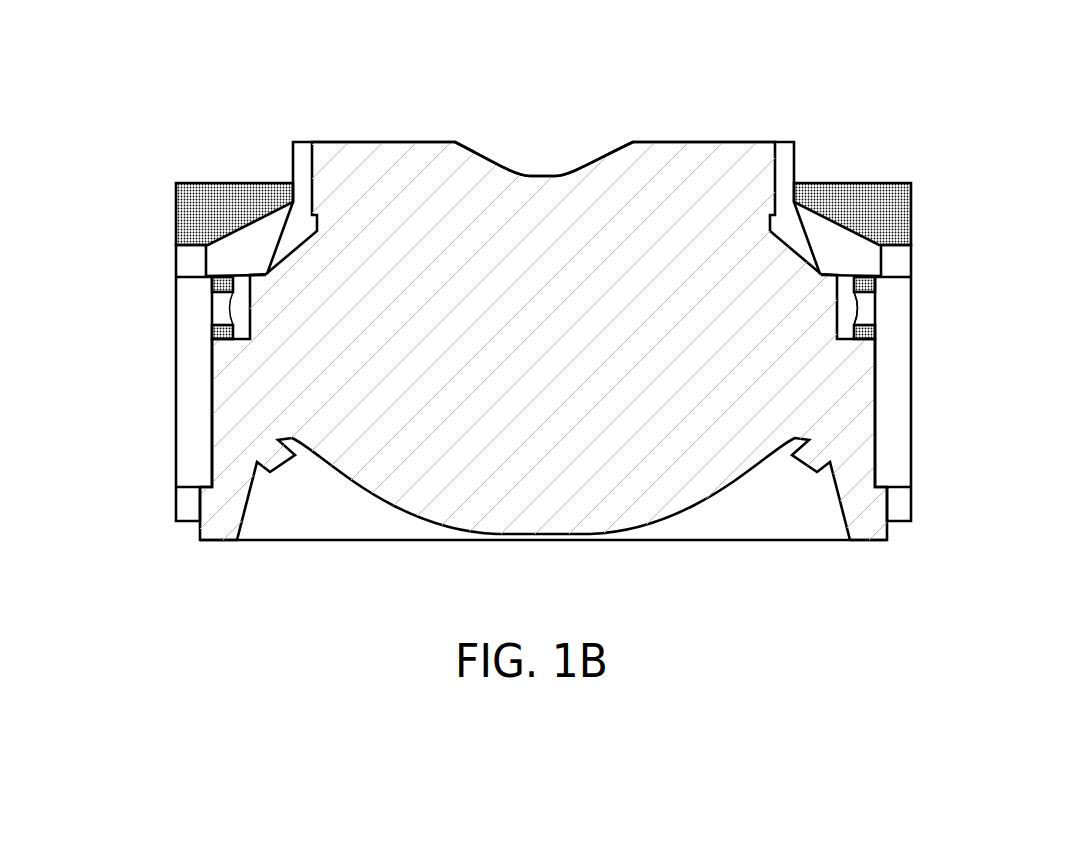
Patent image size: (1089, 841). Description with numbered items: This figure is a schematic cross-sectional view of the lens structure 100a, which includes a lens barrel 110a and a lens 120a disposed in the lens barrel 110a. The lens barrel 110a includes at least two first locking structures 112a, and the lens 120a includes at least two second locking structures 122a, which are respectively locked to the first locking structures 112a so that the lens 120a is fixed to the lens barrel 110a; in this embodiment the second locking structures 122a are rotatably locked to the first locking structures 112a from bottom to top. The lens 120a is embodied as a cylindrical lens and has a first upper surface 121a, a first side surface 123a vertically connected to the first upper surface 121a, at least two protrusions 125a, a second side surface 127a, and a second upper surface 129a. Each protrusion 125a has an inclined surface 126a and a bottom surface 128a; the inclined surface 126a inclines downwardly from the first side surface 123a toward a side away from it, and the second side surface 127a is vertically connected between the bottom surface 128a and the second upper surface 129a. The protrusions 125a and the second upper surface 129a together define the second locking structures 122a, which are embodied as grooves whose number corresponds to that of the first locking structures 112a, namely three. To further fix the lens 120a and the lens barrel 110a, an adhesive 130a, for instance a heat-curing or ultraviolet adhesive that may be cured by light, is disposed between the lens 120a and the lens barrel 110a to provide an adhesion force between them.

The lens structure 100a is at (881, 588).
The lens barrel 110a is at (893, 445).
The first locking structure 112a is at (227, 307).
The lens 120a is at (690, 183).
The first upper surface 121a is at (742, 141).
The second locking structure 122a is at (223, 278).
The first side surface 123a is at (796, 163).
The protrusion 125a is at (1018, 212).
The inclined surface 126a is at (853, 227).
The second side surface 127a is at (857, 312).
The bottom surface 128a is at (860, 279).
The second upper surface 129a is at (865, 326).
The adhesive 130a is at (885, 193).